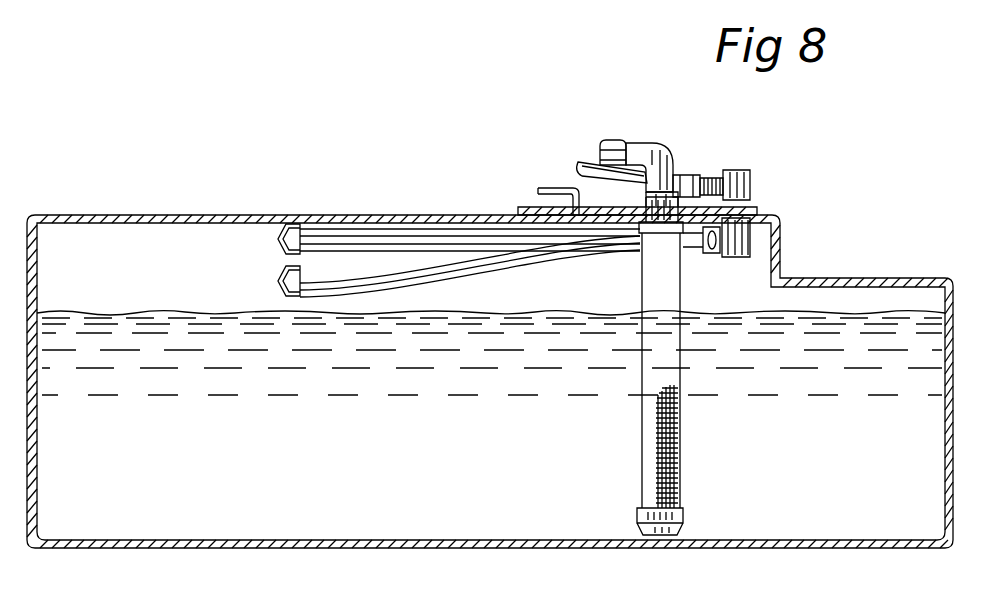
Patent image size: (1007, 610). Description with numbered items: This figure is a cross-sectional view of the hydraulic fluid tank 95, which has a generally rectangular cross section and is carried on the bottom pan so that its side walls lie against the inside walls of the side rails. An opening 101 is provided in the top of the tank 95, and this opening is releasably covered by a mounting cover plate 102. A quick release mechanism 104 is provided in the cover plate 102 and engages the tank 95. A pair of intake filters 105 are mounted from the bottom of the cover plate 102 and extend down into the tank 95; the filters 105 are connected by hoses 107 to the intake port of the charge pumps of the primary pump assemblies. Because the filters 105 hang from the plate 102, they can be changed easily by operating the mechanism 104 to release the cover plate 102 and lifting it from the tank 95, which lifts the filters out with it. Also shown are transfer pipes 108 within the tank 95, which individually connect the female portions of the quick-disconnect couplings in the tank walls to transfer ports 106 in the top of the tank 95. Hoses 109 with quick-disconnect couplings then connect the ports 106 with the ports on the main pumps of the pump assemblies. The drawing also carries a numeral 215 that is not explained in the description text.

The hydraulic fluid tank 95 is at (364, 520).
The opening 101 is at (512, 225).
The mounting cover plate 102 is at (526, 208).
The quick release mechanism 104 is at (556, 190).
The intake filters 105 is at (670, 363).
The transfer ports 106 is at (746, 209).
The hoses 107 is at (612, 142).
The transfer pipes 108 is at (312, 280).
The hoses 109 is at (590, 164).
The fitting 215 is at (746, 258).